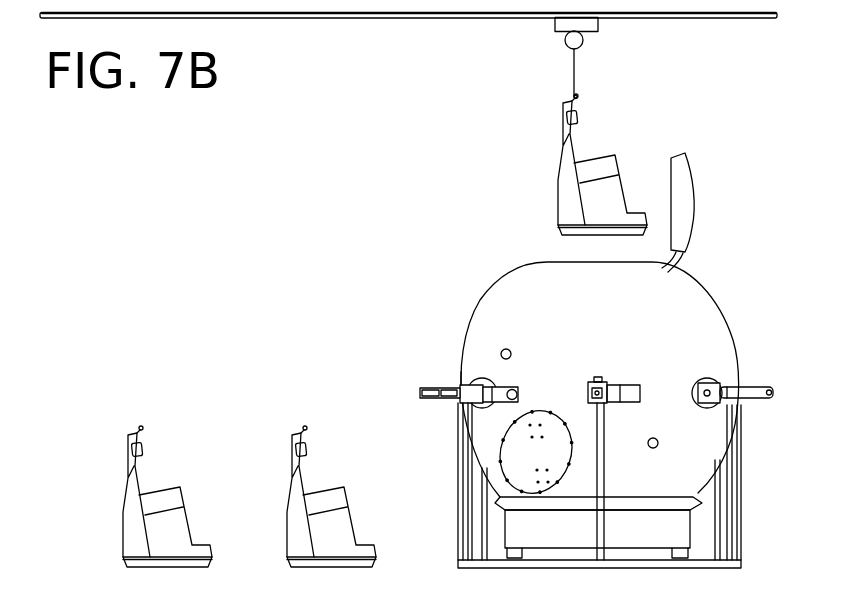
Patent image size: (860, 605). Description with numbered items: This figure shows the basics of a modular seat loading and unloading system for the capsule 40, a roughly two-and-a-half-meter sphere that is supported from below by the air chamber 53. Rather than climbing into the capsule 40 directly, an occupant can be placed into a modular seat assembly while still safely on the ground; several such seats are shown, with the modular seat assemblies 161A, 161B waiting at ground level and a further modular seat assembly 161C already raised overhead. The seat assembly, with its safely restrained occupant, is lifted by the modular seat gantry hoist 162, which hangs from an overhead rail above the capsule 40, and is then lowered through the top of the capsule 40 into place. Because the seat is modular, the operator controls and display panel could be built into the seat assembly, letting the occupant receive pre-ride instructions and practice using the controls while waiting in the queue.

The capsule 40 is at (646, 477).
The air chamber 53 is at (566, 545).
The modular seat assembly 161A is at (140, 478).
The modular seat assembly 161B is at (302, 469).
The modular seat assembly 161C is at (558, 184).
The modular seat gantry hoist 162 is at (563, 43).